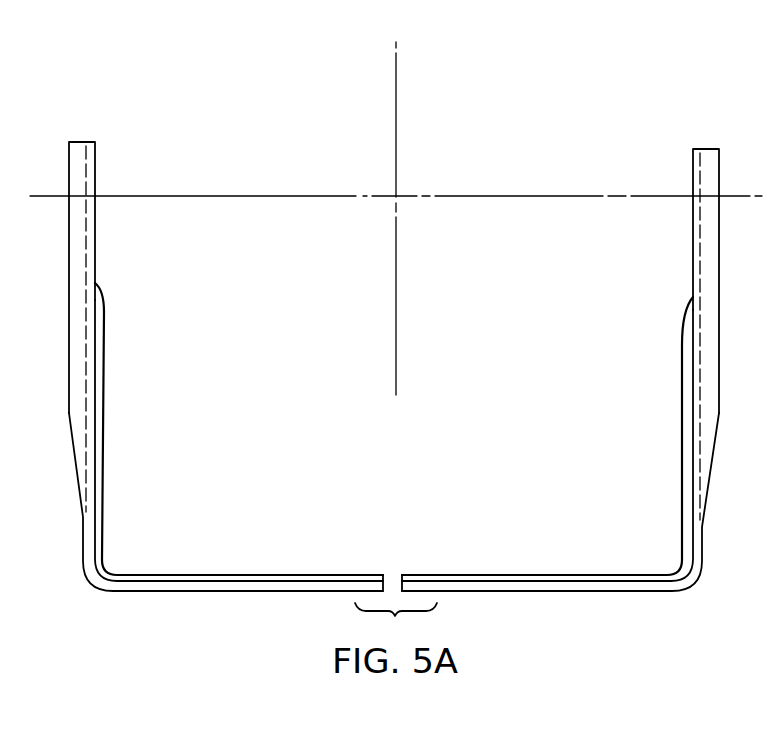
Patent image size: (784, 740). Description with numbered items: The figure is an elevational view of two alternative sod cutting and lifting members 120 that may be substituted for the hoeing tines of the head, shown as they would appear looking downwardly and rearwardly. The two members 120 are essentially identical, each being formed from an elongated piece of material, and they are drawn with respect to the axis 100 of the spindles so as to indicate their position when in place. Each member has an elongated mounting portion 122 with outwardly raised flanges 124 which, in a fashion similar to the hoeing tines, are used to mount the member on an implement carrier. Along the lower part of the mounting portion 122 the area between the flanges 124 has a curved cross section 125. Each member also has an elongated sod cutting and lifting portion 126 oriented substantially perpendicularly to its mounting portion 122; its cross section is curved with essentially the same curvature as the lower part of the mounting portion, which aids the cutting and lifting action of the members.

The axis 100 is at (303, 196).
The sod cutting and lifting member 120 is at (83, 142).
The mounting portion 122 is at (94, 260).
The outwardly raised flange 124 is at (69, 327).
The curved cross section 125 is at (102, 503).
The sod cutting and lifting portion 126 is at (242, 583).